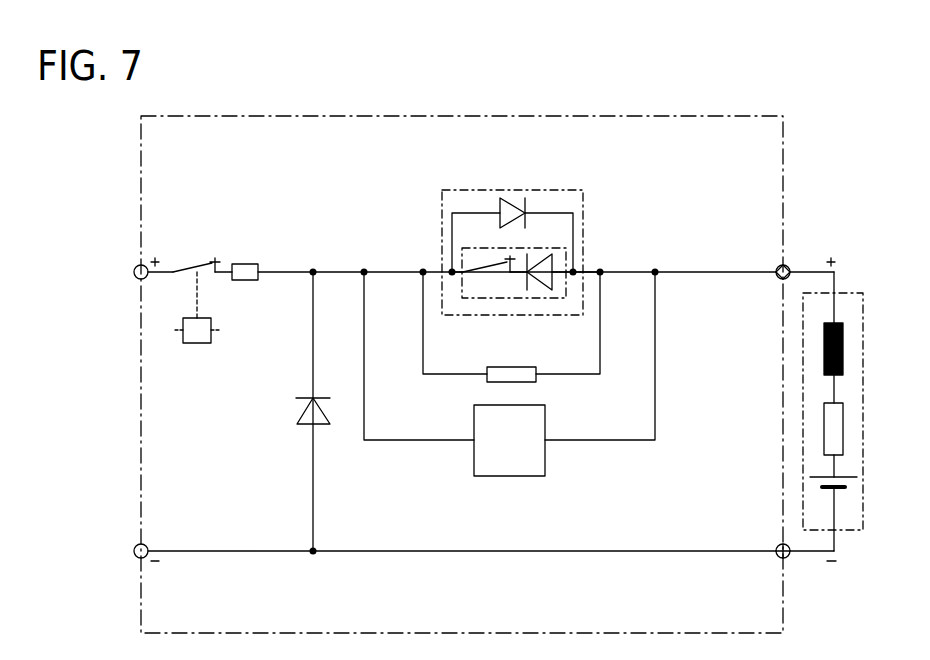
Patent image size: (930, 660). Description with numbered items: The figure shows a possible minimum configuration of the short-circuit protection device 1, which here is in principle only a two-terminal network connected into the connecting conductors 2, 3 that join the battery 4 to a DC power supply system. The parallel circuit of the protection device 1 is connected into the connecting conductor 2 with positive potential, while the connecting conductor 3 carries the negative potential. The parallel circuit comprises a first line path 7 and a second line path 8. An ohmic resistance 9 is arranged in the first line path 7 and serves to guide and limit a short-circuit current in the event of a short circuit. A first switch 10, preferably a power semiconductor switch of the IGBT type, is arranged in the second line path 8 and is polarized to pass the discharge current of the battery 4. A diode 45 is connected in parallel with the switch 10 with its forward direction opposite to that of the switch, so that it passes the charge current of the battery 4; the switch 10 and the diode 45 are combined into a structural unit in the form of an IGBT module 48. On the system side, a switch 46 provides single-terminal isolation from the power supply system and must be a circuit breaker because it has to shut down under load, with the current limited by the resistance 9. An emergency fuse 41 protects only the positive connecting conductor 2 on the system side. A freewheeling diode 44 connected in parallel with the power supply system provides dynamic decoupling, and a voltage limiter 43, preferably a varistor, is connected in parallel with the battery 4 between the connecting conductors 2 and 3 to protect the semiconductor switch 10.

The short-circuit protection device 1 is at (785, 184).
The connecting conductor 2 is at (796, 268).
The connecting conductor 3 is at (797, 554).
The battery 4 is at (855, 531).
The first line path 7 is at (602, 322).
The second line path 8 is at (591, 271).
The ohmic resistance 9 is at (540, 370).
The first switch 10 is at (571, 258).
The emergency fuse 41 is at (243, 262).
The voltage limiter 43 is at (547, 452).
The freewheeling diode 44 is at (297, 414).
The diode 45 is at (514, 198).
The switch 46 is at (197, 344).
The IGBT module 48 is at (557, 190).